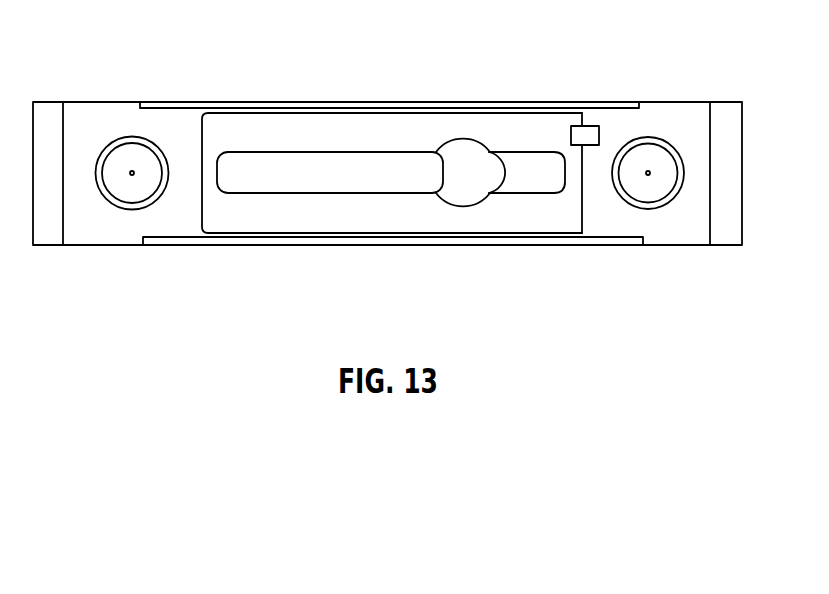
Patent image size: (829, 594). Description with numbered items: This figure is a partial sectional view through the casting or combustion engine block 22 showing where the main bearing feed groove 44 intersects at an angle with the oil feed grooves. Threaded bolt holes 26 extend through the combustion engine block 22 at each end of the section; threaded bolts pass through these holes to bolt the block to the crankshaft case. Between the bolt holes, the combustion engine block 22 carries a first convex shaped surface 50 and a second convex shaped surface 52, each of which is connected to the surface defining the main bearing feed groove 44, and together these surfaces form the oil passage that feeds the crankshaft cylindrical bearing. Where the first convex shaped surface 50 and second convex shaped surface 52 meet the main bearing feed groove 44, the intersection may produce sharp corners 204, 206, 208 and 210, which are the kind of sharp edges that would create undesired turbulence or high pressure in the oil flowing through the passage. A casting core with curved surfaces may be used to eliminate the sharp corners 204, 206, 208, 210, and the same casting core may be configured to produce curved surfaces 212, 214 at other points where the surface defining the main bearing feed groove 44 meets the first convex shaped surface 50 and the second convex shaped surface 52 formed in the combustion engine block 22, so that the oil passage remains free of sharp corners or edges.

The combustion engine block 22 is at (93, 117).
The threaded bolt holes 26 is at (107, 176).
The main bearing feed groove 44 is at (448, 132).
The first convex shaped surface 50 is at (305, 162).
The second convex shaped surface 52 is at (533, 150).
The sharp corner 204 is at (434, 151).
The sharp corner 206 is at (490, 151).
The sharp corner 208 is at (489, 195).
The sharp corner 210 is at (434, 195).
The curved surface 212 is at (460, 138).
The curved surface 214 is at (478, 208).